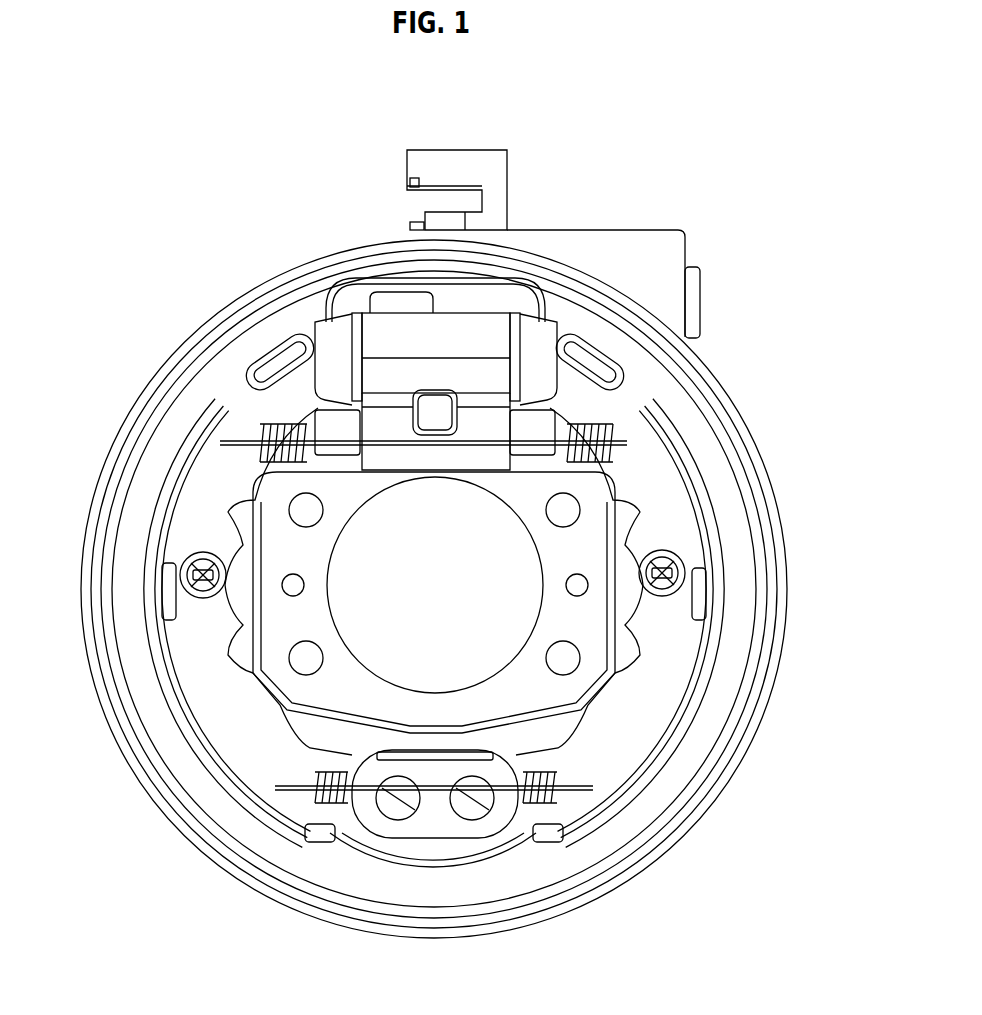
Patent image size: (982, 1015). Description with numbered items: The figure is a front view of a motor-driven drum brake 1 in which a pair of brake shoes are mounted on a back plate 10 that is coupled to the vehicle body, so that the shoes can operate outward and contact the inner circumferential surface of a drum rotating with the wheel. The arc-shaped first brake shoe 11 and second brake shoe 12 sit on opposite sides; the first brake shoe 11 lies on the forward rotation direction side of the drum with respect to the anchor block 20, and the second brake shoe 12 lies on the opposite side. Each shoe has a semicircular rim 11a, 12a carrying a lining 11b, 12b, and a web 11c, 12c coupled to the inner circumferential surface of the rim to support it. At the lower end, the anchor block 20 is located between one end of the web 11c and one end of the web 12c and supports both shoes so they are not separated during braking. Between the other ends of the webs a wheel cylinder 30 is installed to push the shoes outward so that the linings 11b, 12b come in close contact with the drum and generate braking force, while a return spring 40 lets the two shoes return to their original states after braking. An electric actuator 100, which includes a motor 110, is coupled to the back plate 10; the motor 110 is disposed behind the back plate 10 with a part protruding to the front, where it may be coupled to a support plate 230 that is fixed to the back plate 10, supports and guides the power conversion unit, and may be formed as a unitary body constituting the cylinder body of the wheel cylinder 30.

The motor-driven drum brake 1 is at (152, 108).
The back plate 10 is at (700, 427).
The first brake shoe 11 is at (30, 740).
The rim 11a is at (192, 719).
The lining 11b is at (172, 689).
The web 11c is at (250, 740).
The second brake shoe 12 is at (840, 742).
The rim 12a is at (676, 719).
The lining 12b is at (696, 689).
The web 12c is at (618, 740).
The anchor block 20 is at (437, 822).
The wheel cylinder 30 is at (392, 300).
The return spring 40 is at (260, 433).
The electric actuator 100 is at (580, 216).
The motor 110 is at (631, 233).
The support plate 230 is at (378, 413).